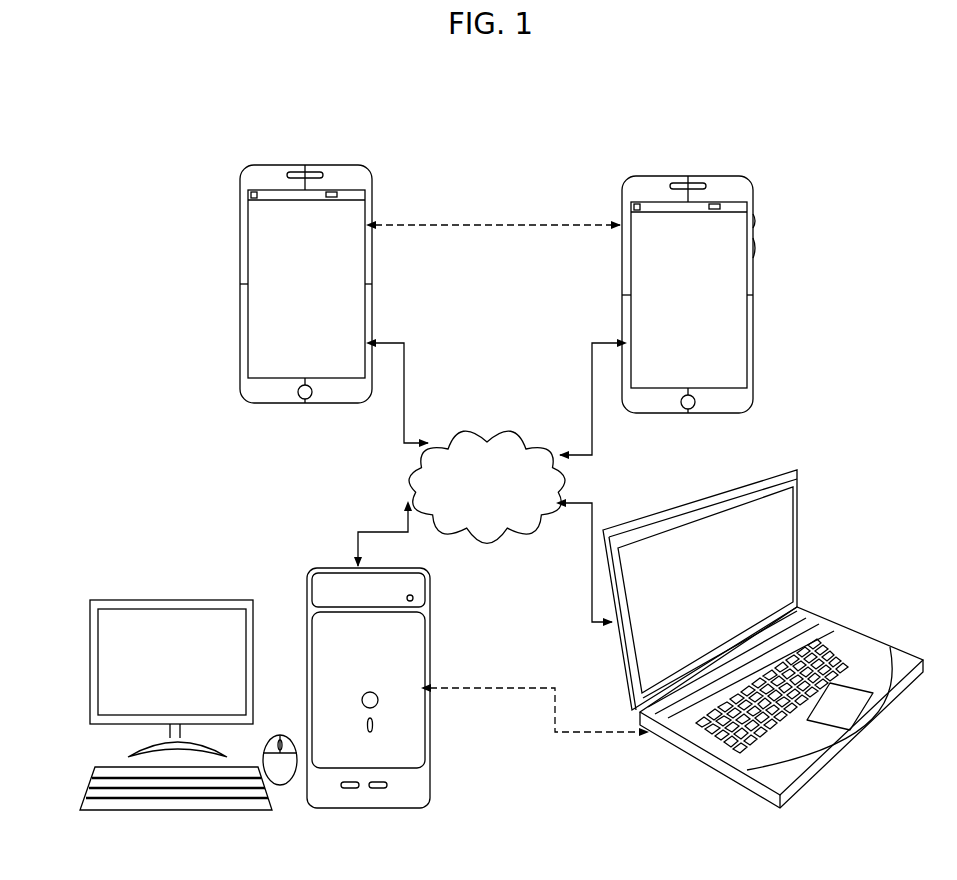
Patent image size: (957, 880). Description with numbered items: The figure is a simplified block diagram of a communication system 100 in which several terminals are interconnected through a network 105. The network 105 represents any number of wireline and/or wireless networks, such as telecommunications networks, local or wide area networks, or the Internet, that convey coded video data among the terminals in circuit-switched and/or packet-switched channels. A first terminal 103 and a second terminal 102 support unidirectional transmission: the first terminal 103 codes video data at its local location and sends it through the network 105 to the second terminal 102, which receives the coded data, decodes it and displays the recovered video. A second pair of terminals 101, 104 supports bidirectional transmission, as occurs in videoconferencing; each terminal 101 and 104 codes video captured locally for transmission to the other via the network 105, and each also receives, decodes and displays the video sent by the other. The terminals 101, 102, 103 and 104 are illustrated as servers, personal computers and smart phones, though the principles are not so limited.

The communication system 100 is at (107, 140).
The terminal 101 is at (238, 273).
The second terminal 102 is at (430, 775).
The first terminal 103 is at (612, 645).
The terminal 104 is at (620, 263).
The network 105 is at (490, 430).